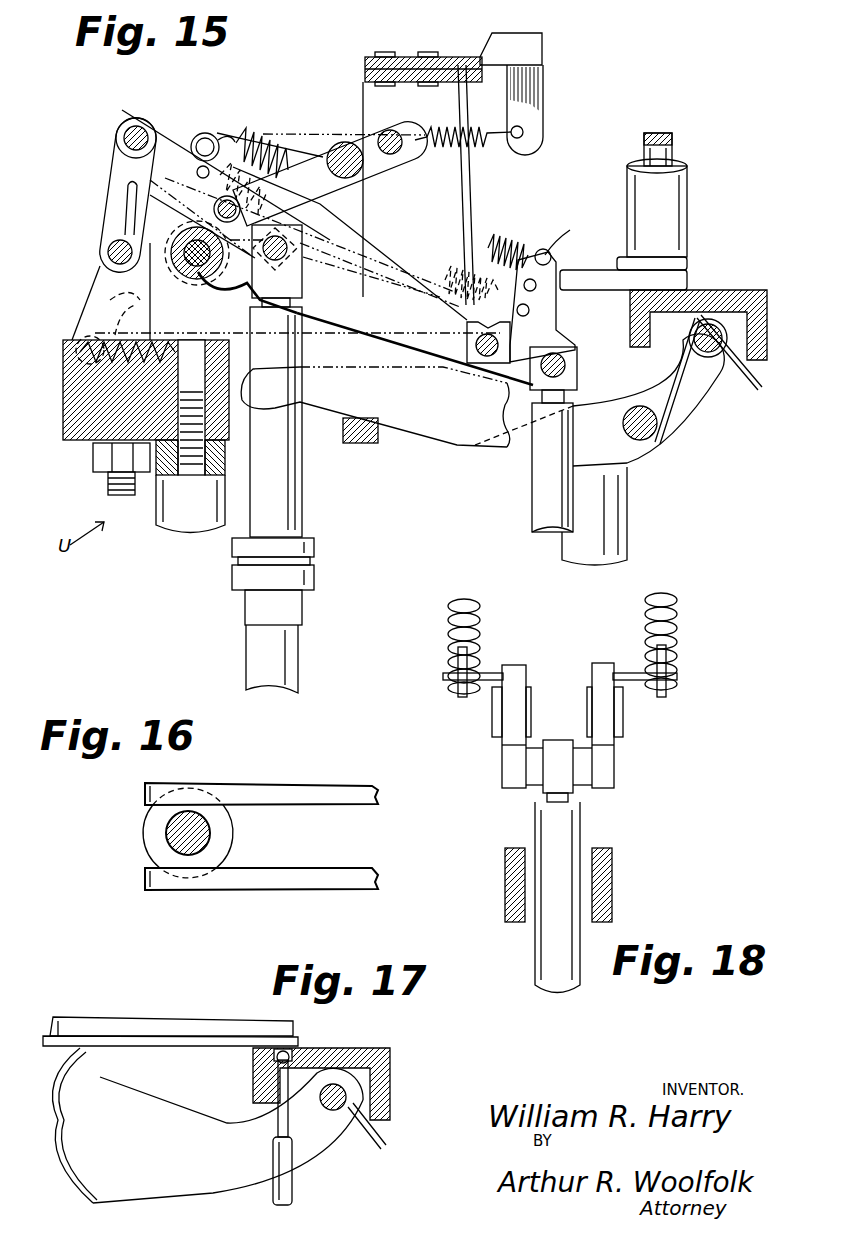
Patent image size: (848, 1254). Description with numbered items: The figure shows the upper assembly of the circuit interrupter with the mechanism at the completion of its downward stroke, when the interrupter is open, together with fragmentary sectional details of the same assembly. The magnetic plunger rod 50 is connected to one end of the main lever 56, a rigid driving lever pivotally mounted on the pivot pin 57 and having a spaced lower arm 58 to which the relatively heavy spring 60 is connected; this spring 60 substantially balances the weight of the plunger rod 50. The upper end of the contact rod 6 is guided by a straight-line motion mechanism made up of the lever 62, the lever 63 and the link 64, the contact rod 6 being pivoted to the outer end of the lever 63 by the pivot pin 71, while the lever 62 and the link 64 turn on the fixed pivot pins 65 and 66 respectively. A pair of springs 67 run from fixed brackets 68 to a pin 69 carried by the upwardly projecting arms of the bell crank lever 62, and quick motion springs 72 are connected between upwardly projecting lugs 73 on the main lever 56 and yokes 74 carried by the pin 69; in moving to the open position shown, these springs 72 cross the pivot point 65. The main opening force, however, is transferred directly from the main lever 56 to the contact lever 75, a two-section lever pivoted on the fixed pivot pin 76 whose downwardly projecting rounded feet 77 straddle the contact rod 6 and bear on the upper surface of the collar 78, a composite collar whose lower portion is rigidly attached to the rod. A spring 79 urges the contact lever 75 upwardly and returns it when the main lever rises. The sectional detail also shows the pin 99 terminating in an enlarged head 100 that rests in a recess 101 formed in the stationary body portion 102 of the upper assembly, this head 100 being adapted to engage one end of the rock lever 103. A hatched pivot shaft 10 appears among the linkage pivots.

In FIG. 15, the contact rod 6 is at (262, 648).
In FIG. 16, the contact rod 6 is at (212, 829).
In FIG. 15, the pivot shaft 10 is at (186, 200).
In FIG. 15, the magnetic plunger rod 50 is at (543, 503).
In FIG. 18, the magnetic plunger rod 50 is at (535, 953).
In FIG. 15, the main lever 56 is at (370, 312).
In FIG. 15, the pivot pin 57 is at (203, 283).
In FIG. 15, the lower arm 58 is at (95, 288).
In FIG. 15, the spring 60 is at (452, 373).
In FIG. 15, the lever 62 is at (316, 155).
In FIG. 15, the lever 63 is at (172, 138).
In FIG. 15, the link 64 is at (112, 200).
In FIG. 15, the fixed pivot pin 65 is at (383, 135).
In FIG. 15, the fixed pivot pin 66 is at (108, 252).
In FIG. 15, the spring 67 is at (483, 148).
In FIG. 15, the fixed bracket 68 is at (527, 114).
In FIG. 15, the pin 69 is at (205, 135).
In FIG. 15, the pivot pin 71 is at (303, 257).
In FIG. 15, the spring 72 is at (500, 237).
In FIG. 18, the spring 72 is at (455, 622).
In FIG. 15, the lug 73 is at (552, 258).
In FIG. 18, the lug 73 is at (548, 672).
In FIG. 15, the yoke 74 is at (237, 130).
In FIG. 15, the contact lever 75 is at (403, 413).
In FIG. 16, the contact lever 75 is at (318, 781).
In FIG. 18, the contact lever 75 is at (505, 882).
In FIG. 17, the contact lever 75 is at (120, 1140).
In FIG. 15, the fixed pivot pin 76 is at (707, 330).
In FIG. 15, the foot 77 is at (280, 418).
In FIG. 15, the collar 78 is at (302, 545).
In FIG. 16, the collar 78 is at (150, 843).
In FIG. 15, the spring 79 is at (673, 408).
In FIG. 17, the spring 79 is at (388, 1146).
In FIG. 17, the pin 99 is at (293, 1155).
In FIG. 17, the head 100 is at (300, 1050).
In FIG. 17, the recess 101 is at (258, 1070).
In FIG. 15, the body portion 102 is at (68, 425).
In FIG. 17, the body portion 102 is at (392, 1068).
In FIG. 17, the rock lever 103 is at (138, 1017).